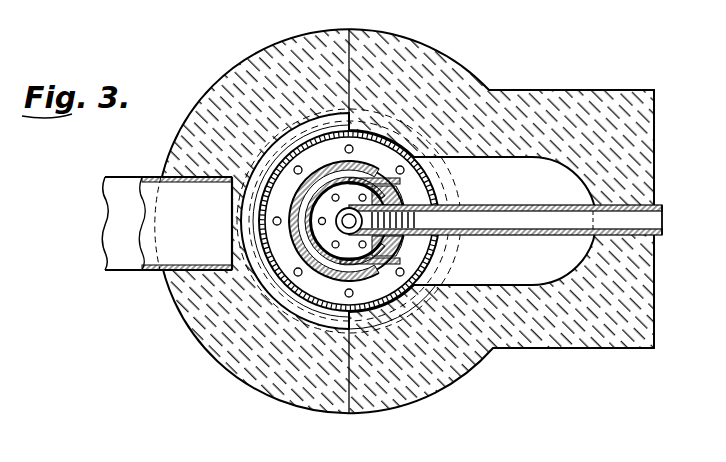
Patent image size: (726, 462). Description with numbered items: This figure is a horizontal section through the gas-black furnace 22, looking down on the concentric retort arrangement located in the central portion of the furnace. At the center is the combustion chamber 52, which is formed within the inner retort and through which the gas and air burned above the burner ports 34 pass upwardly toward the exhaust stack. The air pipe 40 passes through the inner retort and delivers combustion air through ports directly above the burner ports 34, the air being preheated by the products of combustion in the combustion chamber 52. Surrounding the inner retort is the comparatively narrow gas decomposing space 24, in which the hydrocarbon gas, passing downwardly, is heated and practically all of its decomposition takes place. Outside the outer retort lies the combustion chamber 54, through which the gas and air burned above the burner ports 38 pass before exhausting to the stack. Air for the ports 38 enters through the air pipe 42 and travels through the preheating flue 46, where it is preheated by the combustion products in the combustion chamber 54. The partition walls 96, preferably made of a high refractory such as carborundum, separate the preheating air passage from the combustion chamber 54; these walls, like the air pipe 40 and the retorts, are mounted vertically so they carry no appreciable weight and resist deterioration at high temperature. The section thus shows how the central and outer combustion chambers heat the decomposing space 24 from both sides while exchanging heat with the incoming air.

The furnace 22 is at (212, 352).
The gas decomposing space 24 is at (306, 171).
The burner ports 34 is at (361, 248).
The burner ports 38 is at (405, 172).
The air pipe 40 is at (658, 206).
The air pipe 42 is at (126, 270).
The preheating flue 46 is at (257, 183).
The combustion chamber 52 is at (365, 246).
The combustion chamber 54 is at (262, 210).
The partition walls 96 is at (253, 242).